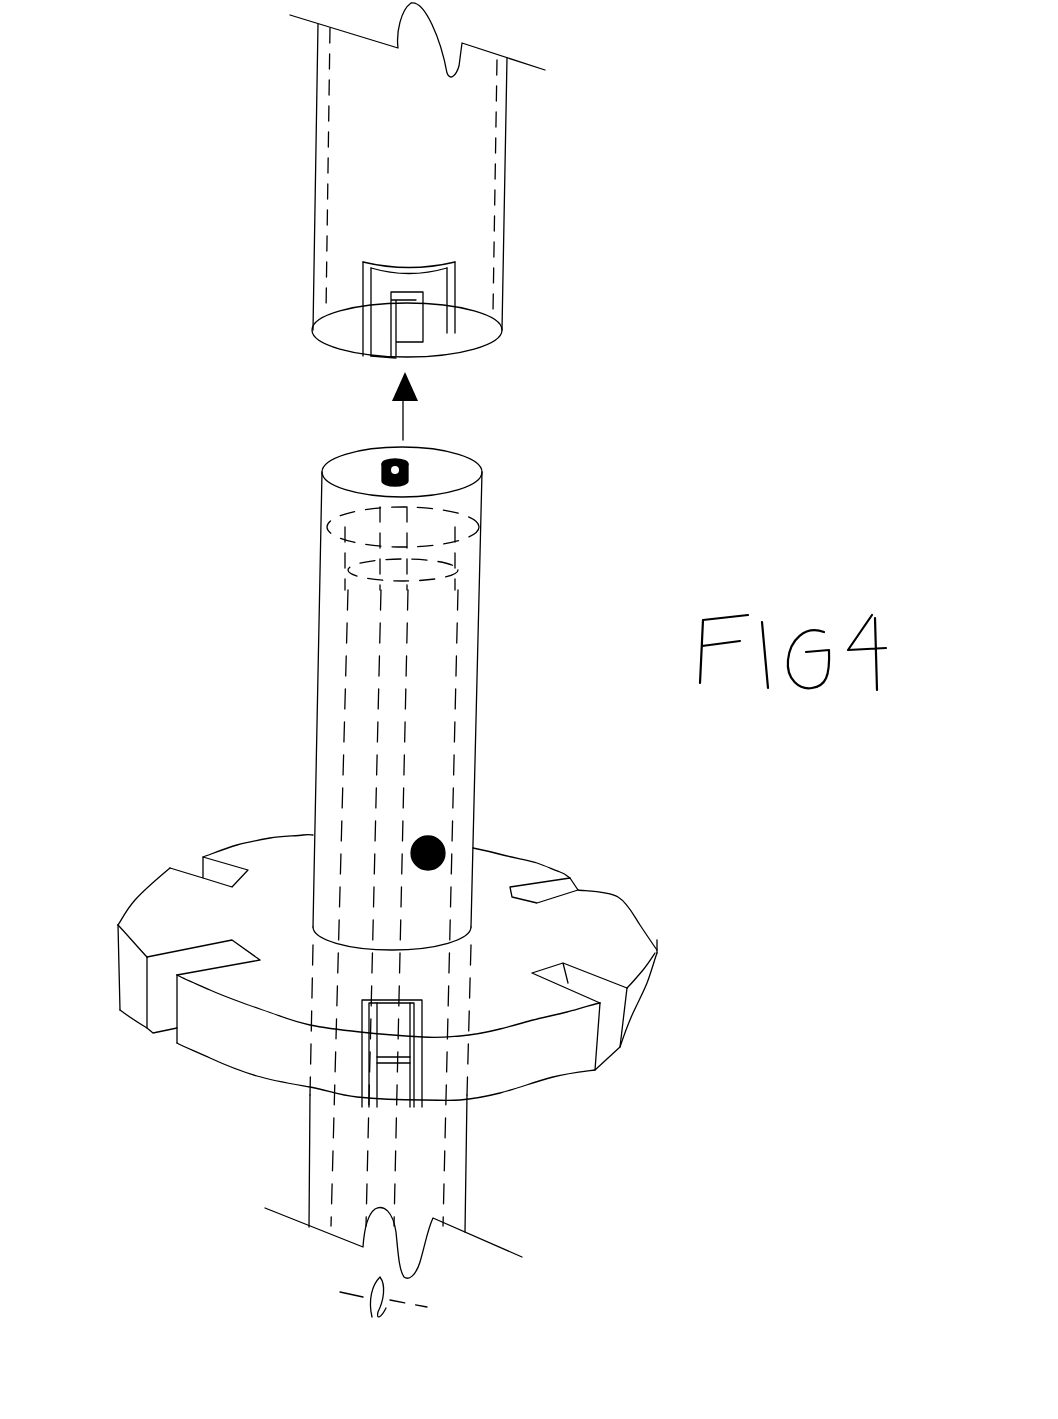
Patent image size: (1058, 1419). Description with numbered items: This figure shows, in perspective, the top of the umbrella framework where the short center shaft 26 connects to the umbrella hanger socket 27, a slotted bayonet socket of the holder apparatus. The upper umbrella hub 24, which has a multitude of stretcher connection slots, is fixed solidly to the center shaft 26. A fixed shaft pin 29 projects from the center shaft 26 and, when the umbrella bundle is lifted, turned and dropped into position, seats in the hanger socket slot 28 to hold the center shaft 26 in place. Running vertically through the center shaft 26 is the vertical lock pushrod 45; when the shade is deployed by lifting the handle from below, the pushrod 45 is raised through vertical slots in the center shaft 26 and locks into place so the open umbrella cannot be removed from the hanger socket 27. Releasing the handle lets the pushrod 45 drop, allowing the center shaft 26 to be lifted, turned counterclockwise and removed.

The upper umbrella hub 24 is at (652, 894).
The short center shaft 26 is at (497, 768).
The umbrella hanger socket 27 is at (524, 160).
The hanger socket slot 28 is at (452, 246).
The fixed shaft pin 29 is at (442, 838).
The vertical lock pushrod 45 is at (420, 447).